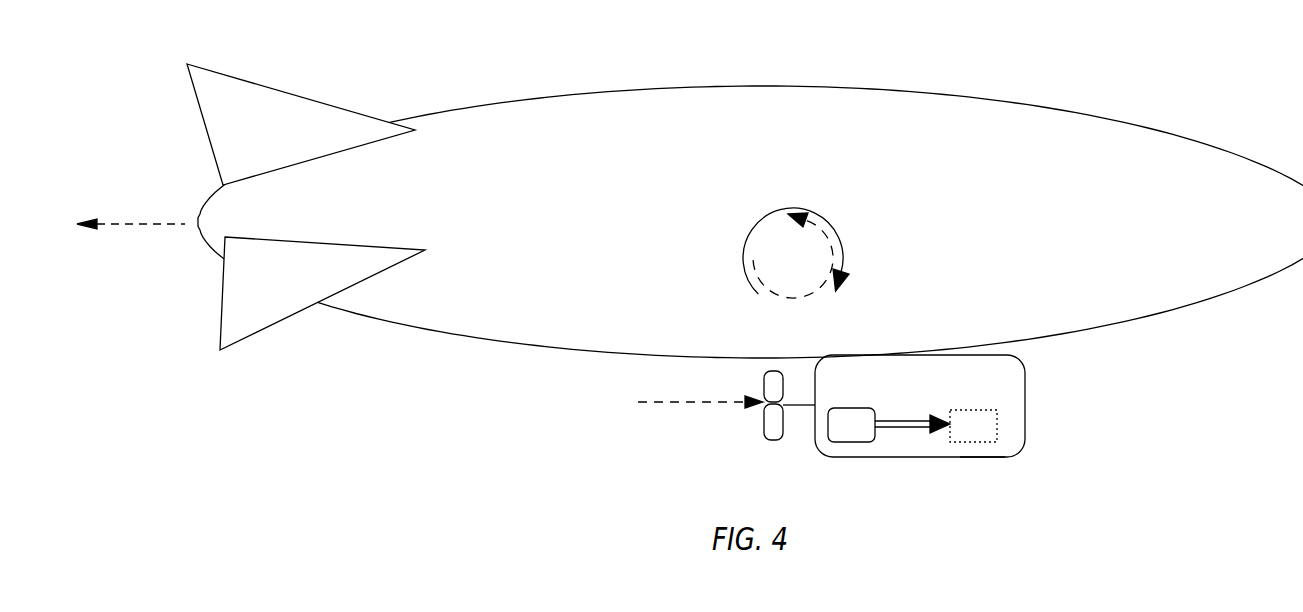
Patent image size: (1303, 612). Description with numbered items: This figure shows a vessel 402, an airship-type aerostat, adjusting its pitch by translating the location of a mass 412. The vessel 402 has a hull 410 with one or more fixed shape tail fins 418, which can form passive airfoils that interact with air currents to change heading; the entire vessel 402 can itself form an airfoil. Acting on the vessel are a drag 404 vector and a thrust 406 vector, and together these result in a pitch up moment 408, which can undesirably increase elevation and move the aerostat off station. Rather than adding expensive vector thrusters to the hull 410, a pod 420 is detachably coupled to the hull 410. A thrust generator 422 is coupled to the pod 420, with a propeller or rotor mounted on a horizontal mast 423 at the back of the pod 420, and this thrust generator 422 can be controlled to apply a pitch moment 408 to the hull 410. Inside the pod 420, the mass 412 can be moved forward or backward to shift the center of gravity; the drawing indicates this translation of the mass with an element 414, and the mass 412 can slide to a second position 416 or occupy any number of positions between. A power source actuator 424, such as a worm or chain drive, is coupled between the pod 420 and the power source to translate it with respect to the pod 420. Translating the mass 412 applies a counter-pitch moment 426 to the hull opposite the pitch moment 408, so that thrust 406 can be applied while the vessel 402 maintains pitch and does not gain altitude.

The vessel 402 is at (577, 95).
The drag 404 is at (130, 224).
The thrust 406 is at (708, 403).
The pitch up moment 408 is at (769, 212).
The hull 410 is at (450, 313).
The mass 412 is at (850, 427).
The drive shaft 414 is at (902, 428).
The second position 416 is at (980, 426).
The fixed shape tail fin 418 is at (240, 90).
The pod 420 is at (1025, 386).
The thrust generator 422 is at (772, 434).
The horizontal mast 423 is at (803, 407).
The power source actuator 424 is at (998, 445).
The counter-pitch moment 426 is at (778, 297).